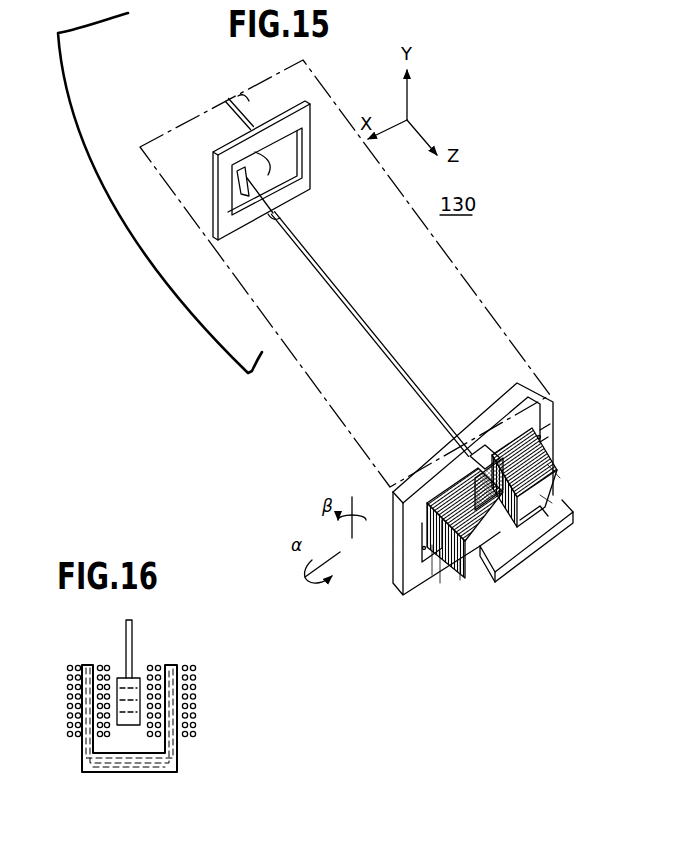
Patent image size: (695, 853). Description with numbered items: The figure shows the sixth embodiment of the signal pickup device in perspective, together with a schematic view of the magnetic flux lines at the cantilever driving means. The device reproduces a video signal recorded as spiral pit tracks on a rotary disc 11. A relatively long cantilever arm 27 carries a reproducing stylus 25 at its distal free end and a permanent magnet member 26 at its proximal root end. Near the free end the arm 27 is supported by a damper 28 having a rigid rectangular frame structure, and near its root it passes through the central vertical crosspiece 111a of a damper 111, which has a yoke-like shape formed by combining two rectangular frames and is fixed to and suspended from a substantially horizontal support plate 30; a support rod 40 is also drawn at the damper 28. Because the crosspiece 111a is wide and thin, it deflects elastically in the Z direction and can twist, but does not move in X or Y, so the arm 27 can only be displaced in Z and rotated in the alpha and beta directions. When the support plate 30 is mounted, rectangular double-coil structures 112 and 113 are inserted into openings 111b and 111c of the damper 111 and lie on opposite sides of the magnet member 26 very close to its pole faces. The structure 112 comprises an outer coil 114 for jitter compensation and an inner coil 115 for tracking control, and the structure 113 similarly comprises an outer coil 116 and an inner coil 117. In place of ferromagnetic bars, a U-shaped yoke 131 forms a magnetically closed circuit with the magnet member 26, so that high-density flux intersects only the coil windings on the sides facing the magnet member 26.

In FIG. 15, the rotary disc 11 is at (150, 268).
In FIG. 15, the reproducing stylus 25 is at (240, 181).
In FIG. 15, the permanent magnet member 26 is at (481, 473).
In FIG. 16, the permanent magnet member 26 is at (138, 678).
In FIG. 15, the cantilever arm 27 is at (353, 305).
In FIG. 16, the cantilever arm 27 is at (138, 632).
In FIG. 15, the damper 28 is at (312, 163).
In FIG. 15, the support plate 30 is at (490, 299).
In FIG. 15, the support rod 40 is at (246, 102).
In FIG. 15, the damper 111 is at (489, 482).
In FIG. 15, the central vertical crosspiece 111a is at (483, 455).
In FIG. 15, the opening 111b is at (423, 548).
In FIG. 15, the opening 111c is at (540, 437).
In FIG. 15, the double-coil structure 112 is at (465, 553).
In FIG. 15, the double-coil structure 113 is at (560, 477).
In FIG. 15, the outer coil 114 is at (468, 580).
In FIG. 16, the outer coil 114 is at (70, 666).
In FIG. 15, the inner coil 115 is at (482, 572).
In FIG. 16, the inner coil 115 is at (100, 666).
In FIG. 15, the outer coil 116 is at (558, 477).
In FIG. 16, the outer coil 116 is at (196, 733).
In FIG. 15, the inner coil 117 is at (548, 500).
In FIG. 16, the inner coil 117 is at (186, 666).
In FIG. 15, the U-shaped yoke 131 is at (530, 553).
In FIG. 16, the U-shaped yoke 131 is at (147, 773).